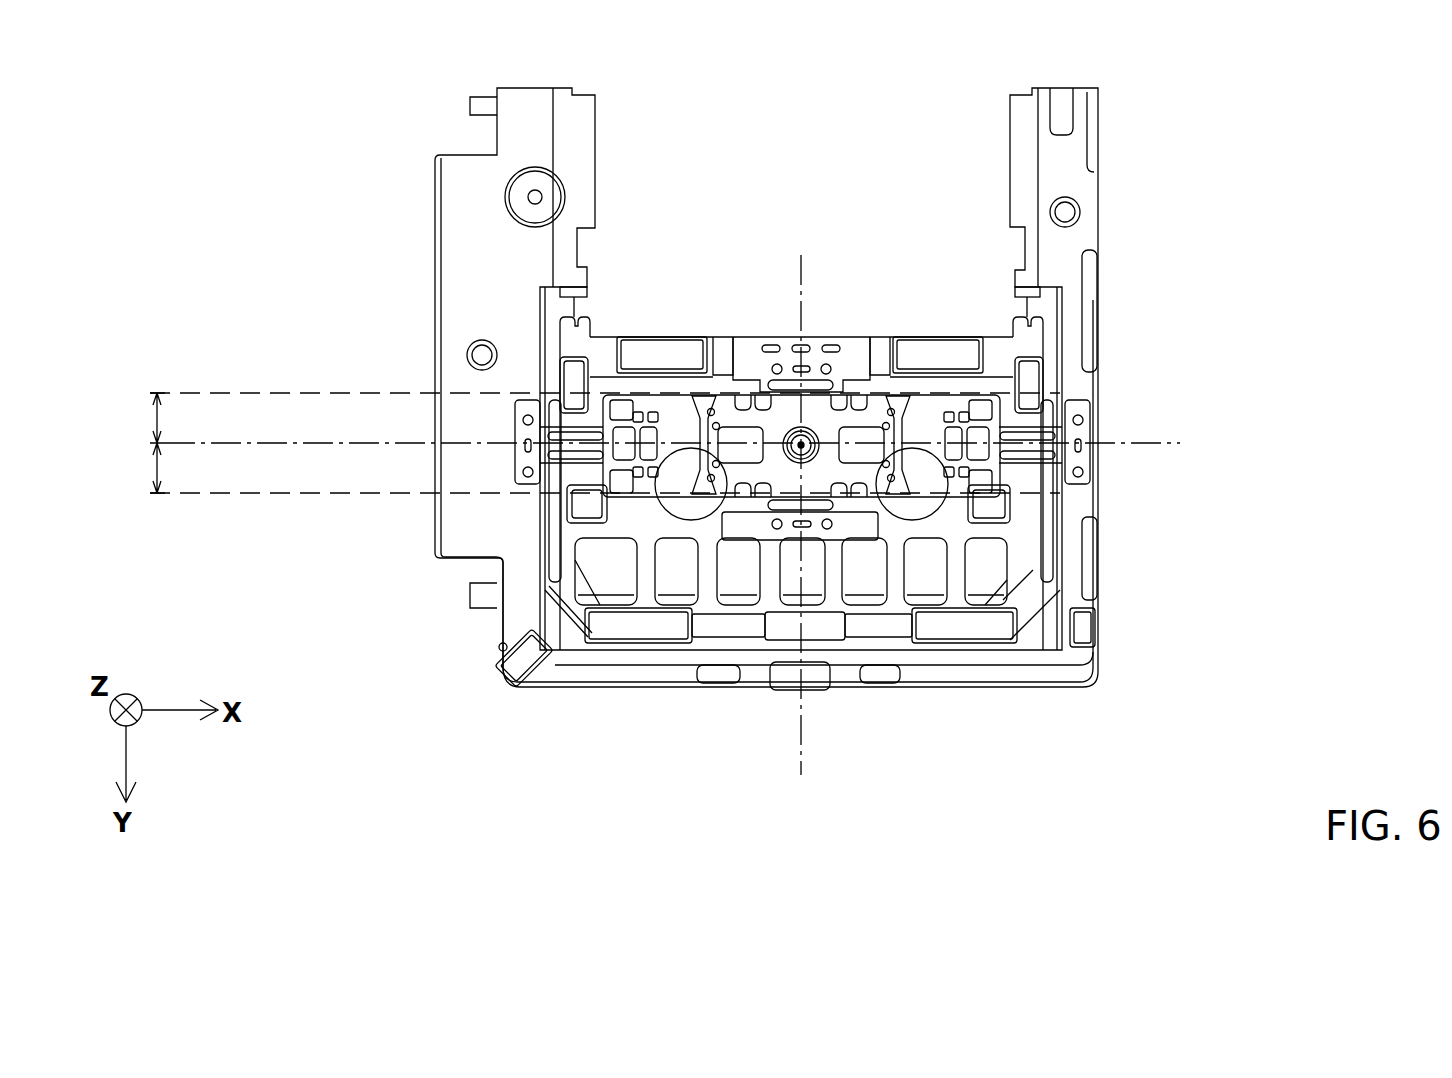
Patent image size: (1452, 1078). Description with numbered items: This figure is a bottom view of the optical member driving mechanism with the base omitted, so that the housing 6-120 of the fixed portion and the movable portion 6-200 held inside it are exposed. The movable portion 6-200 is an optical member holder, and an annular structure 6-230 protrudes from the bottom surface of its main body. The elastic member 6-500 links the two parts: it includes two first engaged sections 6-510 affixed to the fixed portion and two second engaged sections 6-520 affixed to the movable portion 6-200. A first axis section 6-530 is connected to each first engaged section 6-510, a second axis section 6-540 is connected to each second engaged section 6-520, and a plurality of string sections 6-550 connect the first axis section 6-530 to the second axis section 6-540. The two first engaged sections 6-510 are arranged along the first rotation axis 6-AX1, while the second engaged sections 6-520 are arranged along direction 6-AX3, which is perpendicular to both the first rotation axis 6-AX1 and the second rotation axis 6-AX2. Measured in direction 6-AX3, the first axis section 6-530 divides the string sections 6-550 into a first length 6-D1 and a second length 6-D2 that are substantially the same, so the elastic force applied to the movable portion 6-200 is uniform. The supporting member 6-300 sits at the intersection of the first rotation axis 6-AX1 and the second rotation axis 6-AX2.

The housing 6-120 is at (1063, 270).
The movable portion 6-200 is at (1000, 353).
The annular structure 6-230 is at (785, 450).
The supporting member 6-300 is at (784, 452).
The elastic member 6-500 is at (1104, 426).
The first engaged section 6-510 is at (520, 428).
The second engaged section 6-520 is at (877, 350).
The first axis section 6-530 is at (1025, 435).
The second axis section 6-540 is at (762, 390).
The string sections 6-550 is at (613, 395).
The first rotation axis 6-AX1 is at (672, 443).
The second rotation axis 6-AX2 is at (804, 440).
The direction 6-AX3 is at (794, 501).
The first length 6-D1 is at (571, 418).
The second length 6-D2 is at (571, 468).